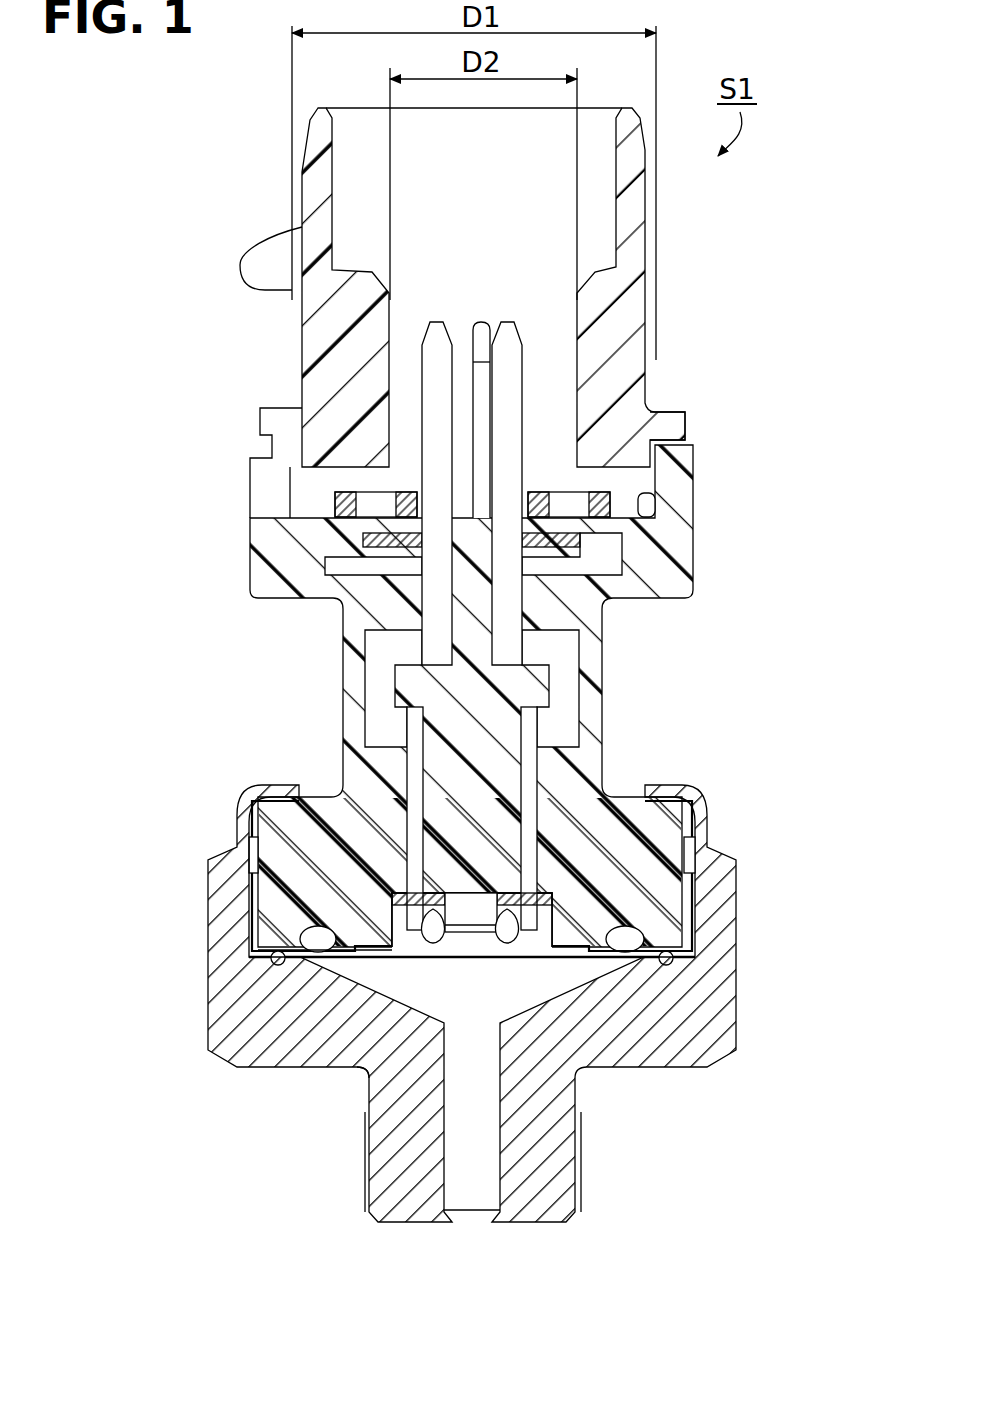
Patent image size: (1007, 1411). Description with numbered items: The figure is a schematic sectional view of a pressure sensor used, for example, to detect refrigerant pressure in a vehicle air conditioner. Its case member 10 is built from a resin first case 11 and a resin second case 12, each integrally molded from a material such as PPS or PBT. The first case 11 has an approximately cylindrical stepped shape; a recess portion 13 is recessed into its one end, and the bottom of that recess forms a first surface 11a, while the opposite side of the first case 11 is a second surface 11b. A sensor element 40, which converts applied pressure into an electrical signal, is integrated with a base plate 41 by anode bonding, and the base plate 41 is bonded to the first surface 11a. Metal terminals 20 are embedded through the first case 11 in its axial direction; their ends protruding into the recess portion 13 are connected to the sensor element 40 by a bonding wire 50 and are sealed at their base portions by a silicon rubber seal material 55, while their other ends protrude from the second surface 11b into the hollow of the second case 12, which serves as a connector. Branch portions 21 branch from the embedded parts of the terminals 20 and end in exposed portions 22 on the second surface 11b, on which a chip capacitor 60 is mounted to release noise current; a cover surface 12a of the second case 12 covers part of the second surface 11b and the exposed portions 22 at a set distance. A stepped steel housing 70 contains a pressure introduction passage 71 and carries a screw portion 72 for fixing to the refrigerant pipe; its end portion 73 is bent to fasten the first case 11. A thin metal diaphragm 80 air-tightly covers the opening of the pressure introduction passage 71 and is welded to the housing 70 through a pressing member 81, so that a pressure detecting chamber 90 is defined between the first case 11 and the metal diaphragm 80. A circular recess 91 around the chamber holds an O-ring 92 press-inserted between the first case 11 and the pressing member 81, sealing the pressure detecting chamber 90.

The case member 10 is at (532, 313).
The first case 11 is at (510, 696).
The first surface 11a is at (478, 893).
The second surface 11b is at (655, 500).
The second case 12 is at (701, 287).
The cover surface 12a is at (672, 428).
The recess portion 13 is at (285, 967).
The terminal 20 is at (478, 332).
The branch portion 21 is at (390, 565).
The exposed portion 22 is at (375, 540).
The sensor element 40 is at (470, 918).
The base plate 41 is at (472, 935).
The wire 50 is at (390, 965).
The seal material 55 is at (254, 808).
The chip capacitor 60 is at (365, 504).
The housing 70 is at (508, 1014).
The pressure introduction passage 71 is at (484, 1212).
The screw portion 72 is at (580, 1183).
The end portion 73 is at (650, 785).
The metal diaphragm 80 is at (515, 942).
The pressing member 81 is at (272, 957).
The pressure detecting chamber 90 is at (345, 1068).
The circular recess 91 is at (252, 875).
The O-ring 92 is at (312, 935).